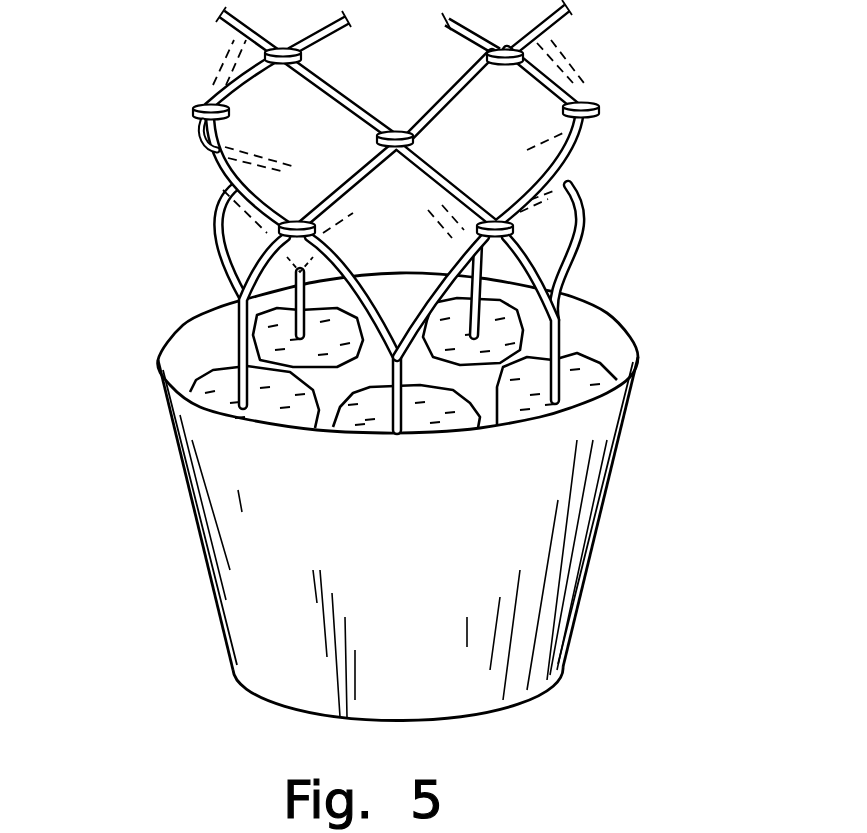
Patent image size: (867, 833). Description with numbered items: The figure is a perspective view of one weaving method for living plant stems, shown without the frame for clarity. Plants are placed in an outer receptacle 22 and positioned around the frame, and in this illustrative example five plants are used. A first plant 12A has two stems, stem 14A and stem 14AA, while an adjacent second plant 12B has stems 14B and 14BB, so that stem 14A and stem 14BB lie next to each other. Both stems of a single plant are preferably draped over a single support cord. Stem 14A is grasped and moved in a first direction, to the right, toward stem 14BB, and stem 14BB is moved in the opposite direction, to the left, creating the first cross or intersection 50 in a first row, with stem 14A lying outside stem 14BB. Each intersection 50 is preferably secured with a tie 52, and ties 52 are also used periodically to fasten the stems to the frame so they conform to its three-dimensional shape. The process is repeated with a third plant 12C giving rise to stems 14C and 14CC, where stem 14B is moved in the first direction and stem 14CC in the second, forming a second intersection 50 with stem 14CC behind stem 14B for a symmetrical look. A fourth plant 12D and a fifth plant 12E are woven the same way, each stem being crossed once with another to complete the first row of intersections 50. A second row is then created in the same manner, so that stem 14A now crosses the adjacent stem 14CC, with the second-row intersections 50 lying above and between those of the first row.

The outer receptacle 22 is at (578, 562).
The first plant 12A is at (240, 355).
The second plant 12B is at (396, 440).
The third plant 12C is at (580, 357).
The fourth plant 12D is at (478, 300).
The fifth plant 12E is at (290, 300).
The stem 14A is at (262, 263).
The stem 14AA is at (213, 237).
The stem 14B is at (430, 330).
The stem 14BB is at (348, 390).
The stem 14C is at (583, 217).
The stem 14CC is at (530, 262).
The intersection 50 is at (297, 223).
The tie 52 is at (220, 207).